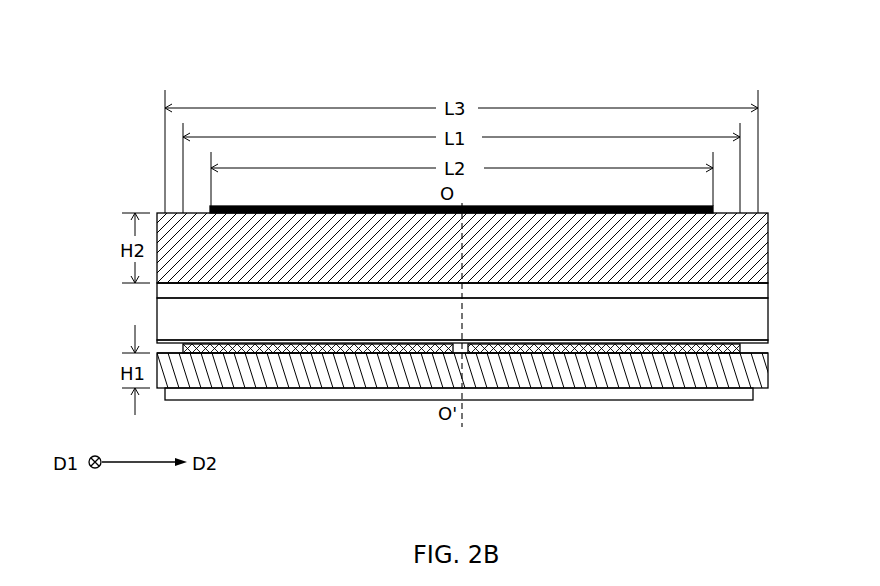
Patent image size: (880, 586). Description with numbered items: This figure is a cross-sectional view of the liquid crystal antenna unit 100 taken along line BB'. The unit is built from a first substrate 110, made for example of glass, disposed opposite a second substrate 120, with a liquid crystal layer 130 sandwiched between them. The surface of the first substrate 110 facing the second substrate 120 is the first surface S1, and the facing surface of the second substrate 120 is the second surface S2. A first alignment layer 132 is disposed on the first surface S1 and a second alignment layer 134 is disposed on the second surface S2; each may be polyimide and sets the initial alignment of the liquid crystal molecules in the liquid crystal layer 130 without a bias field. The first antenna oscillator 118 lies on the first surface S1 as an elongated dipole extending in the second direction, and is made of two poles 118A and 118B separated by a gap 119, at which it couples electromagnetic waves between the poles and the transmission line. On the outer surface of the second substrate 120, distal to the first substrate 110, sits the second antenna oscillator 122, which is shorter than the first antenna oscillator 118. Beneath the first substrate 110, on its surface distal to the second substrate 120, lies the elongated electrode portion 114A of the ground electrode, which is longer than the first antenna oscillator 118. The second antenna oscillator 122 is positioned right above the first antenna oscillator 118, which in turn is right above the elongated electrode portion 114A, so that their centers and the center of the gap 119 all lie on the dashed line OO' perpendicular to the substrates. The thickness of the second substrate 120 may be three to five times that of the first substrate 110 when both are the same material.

The liquid crystal antenna unit 100 is at (528, 95).
The first substrate 110 is at (753, 373).
The elongated electrode portion 114A is at (753, 391).
The first antenna oscillator 118 is at (570, 455).
The pole 118A is at (412, 353).
The pole 118B is at (518, 353).
The gap 119 is at (468, 350).
The second substrate 120 is at (753, 233).
The second antenna oscillator 122 is at (628, 206).
The liquid crystal layer 130 is at (753, 320).
The first alignment layer 132 is at (753, 345).
The second alignment layer 134 is at (753, 289).
The first surface S1 is at (736, 356).
The second surface S2 is at (733, 282).